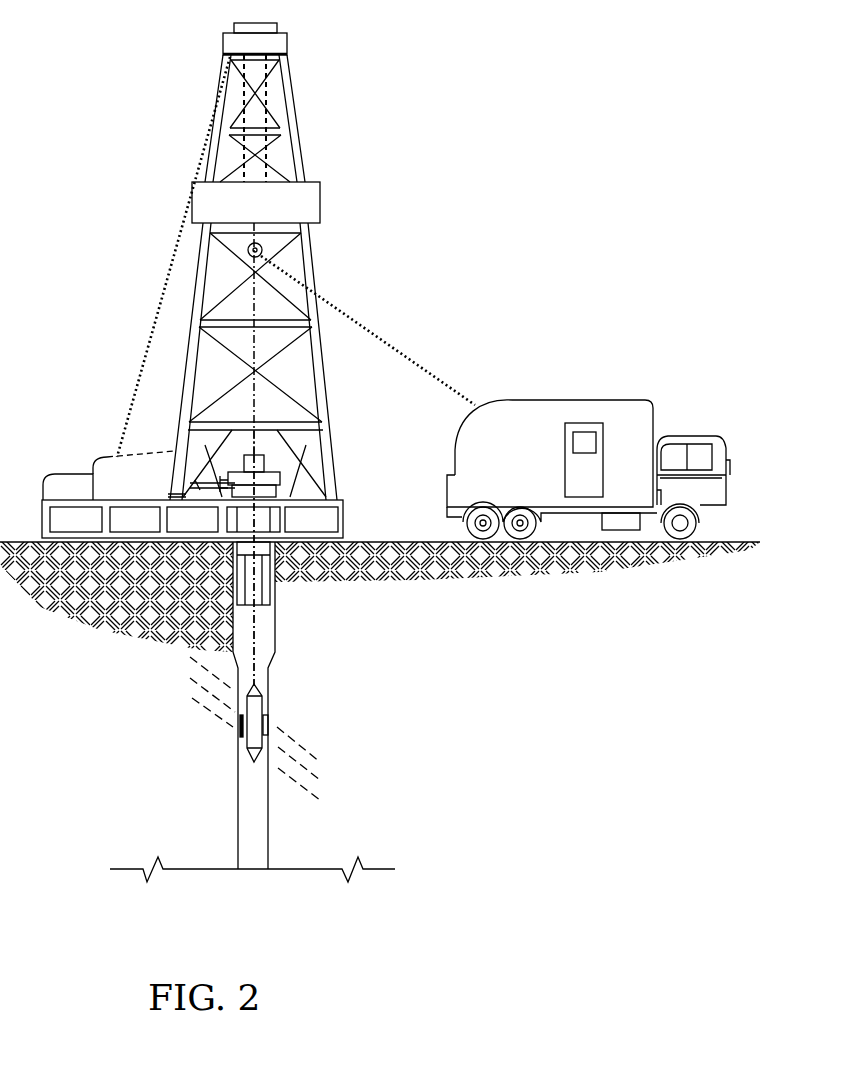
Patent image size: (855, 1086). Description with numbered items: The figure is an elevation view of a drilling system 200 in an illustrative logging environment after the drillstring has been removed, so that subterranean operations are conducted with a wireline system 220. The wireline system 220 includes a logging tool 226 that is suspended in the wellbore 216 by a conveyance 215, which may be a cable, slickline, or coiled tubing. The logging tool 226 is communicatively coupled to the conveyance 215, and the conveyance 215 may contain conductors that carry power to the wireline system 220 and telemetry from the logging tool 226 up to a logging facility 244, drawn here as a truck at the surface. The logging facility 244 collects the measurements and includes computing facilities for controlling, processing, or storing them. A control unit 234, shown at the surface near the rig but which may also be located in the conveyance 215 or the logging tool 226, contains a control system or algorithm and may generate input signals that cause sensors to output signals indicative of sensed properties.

The drilling system 200 is at (476, 210).
The conveyance 215 is at (275, 600).
The wellbore 216 is at (270, 643).
The wireline system 220 is at (254, 709).
The logging tool 226 is at (238, 726).
The control unit 234 is at (277, 466).
The logging facility 244 is at (583, 398).